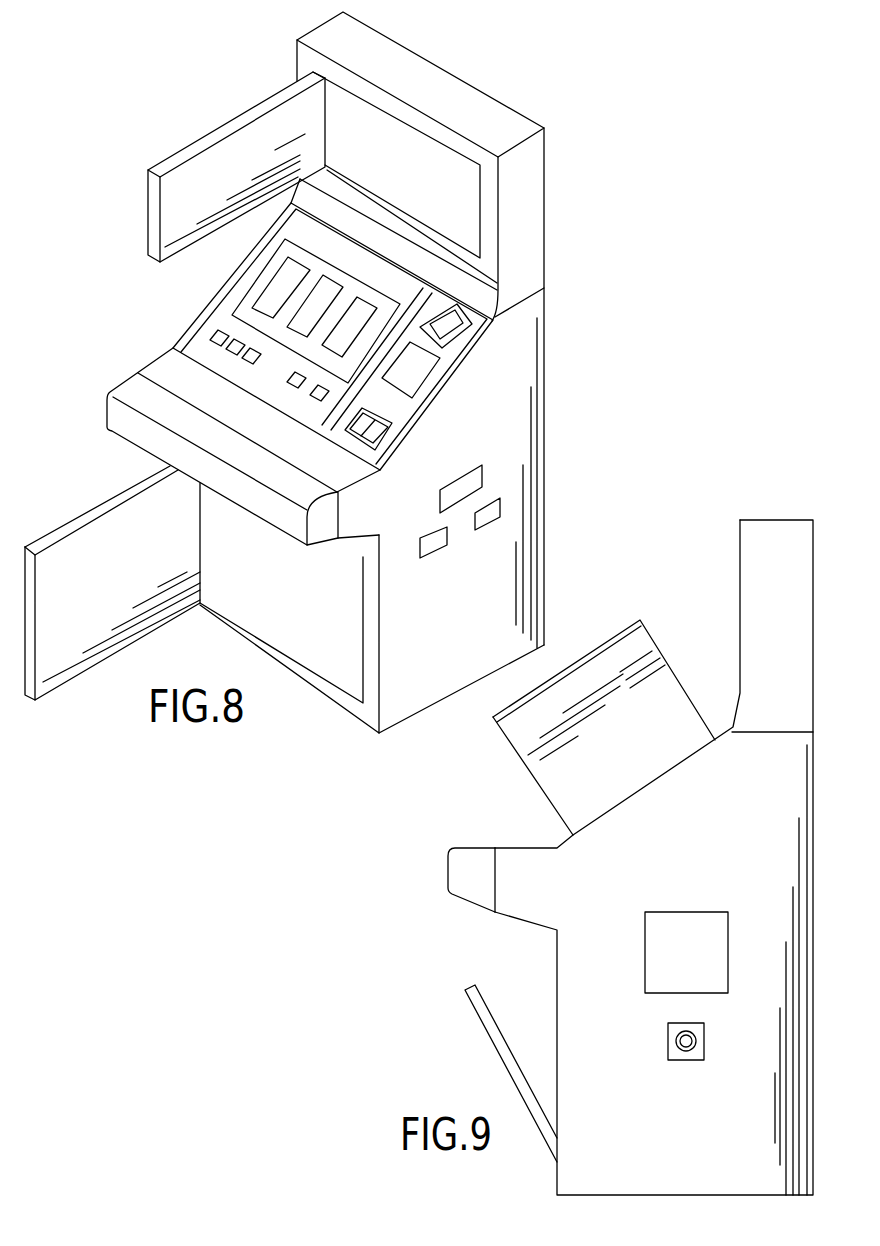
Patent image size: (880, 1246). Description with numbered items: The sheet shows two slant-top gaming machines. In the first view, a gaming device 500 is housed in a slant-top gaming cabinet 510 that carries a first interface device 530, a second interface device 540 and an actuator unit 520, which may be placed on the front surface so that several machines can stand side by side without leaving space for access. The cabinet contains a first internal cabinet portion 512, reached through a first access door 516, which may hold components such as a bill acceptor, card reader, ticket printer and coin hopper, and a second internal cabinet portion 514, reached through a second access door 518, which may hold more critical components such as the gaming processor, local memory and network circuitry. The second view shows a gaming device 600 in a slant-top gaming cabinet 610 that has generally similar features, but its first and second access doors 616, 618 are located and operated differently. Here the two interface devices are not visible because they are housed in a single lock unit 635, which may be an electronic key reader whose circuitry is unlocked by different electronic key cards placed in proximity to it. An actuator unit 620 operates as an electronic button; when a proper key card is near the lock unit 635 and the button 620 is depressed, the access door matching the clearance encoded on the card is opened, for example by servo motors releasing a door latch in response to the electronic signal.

In FIG. 8, the gaming device 500 is at (148, 107).
In FIG. 8, the slant-top gaming cabinet 510 is at (447, 66).
In FIG. 8, the first internal cabinet portion 512 is at (455, 195).
In FIG. 8, the second internal cabinet portion 514 is at (333, 645).
In FIG. 8, the first access door 516 is at (147, 213).
In FIG. 8, the second access door 518 is at (75, 520).
In FIG. 8, the actuator unit 520 is at (463, 469).
In FIG. 8, the first interface device 530 is at (492, 526).
In FIG. 8, the second interface device 540 is at (433, 559).
In FIG. 9, the gaming device 600 is at (666, 583).
In FIG. 9, the slant-top gaming cabinet 610 is at (780, 519).
In FIG. 9, the first access door 616 is at (535, 781).
In FIG. 9, the second access door 618 is at (482, 1030).
In FIG. 9, the actuator unit 620 is at (686, 1062).
In FIG. 9, the lock unit 635 is at (690, 911).